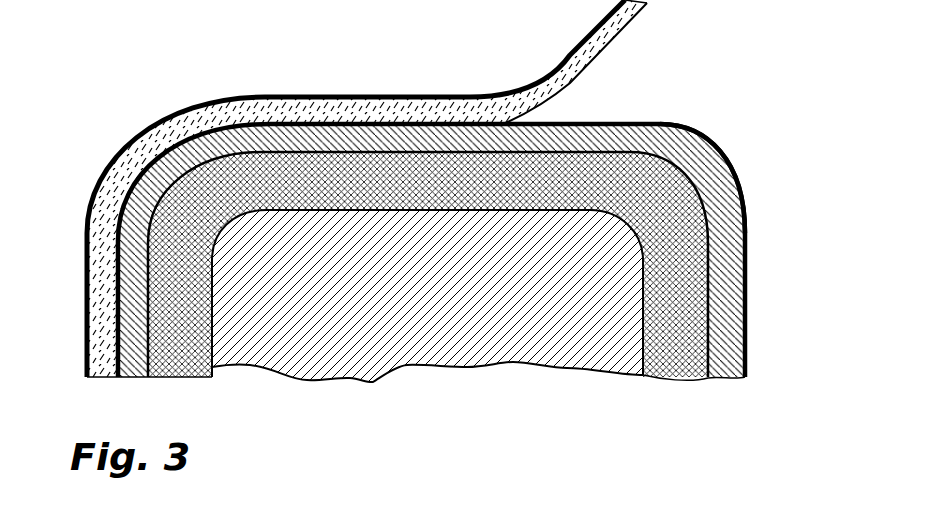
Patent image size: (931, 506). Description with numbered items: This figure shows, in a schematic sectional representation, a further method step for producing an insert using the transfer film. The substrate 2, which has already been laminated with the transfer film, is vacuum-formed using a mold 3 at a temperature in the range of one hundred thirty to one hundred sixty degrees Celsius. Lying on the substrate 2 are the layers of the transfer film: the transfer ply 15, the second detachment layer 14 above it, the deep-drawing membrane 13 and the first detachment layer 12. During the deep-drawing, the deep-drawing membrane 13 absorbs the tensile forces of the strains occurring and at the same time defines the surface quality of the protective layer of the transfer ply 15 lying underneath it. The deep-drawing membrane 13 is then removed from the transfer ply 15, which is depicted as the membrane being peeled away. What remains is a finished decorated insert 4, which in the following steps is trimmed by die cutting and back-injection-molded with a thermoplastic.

The substrate 2 is at (675, 222).
The mold 3 is at (627, 300).
The decorated insert 4 is at (743, 388).
The first detachment layer 12 is at (620, 5).
The deep-drawing membrane 13 is at (633, 20).
The second detachment layer 14 is at (623, 125).
The transfer ply 15 is at (682, 163).